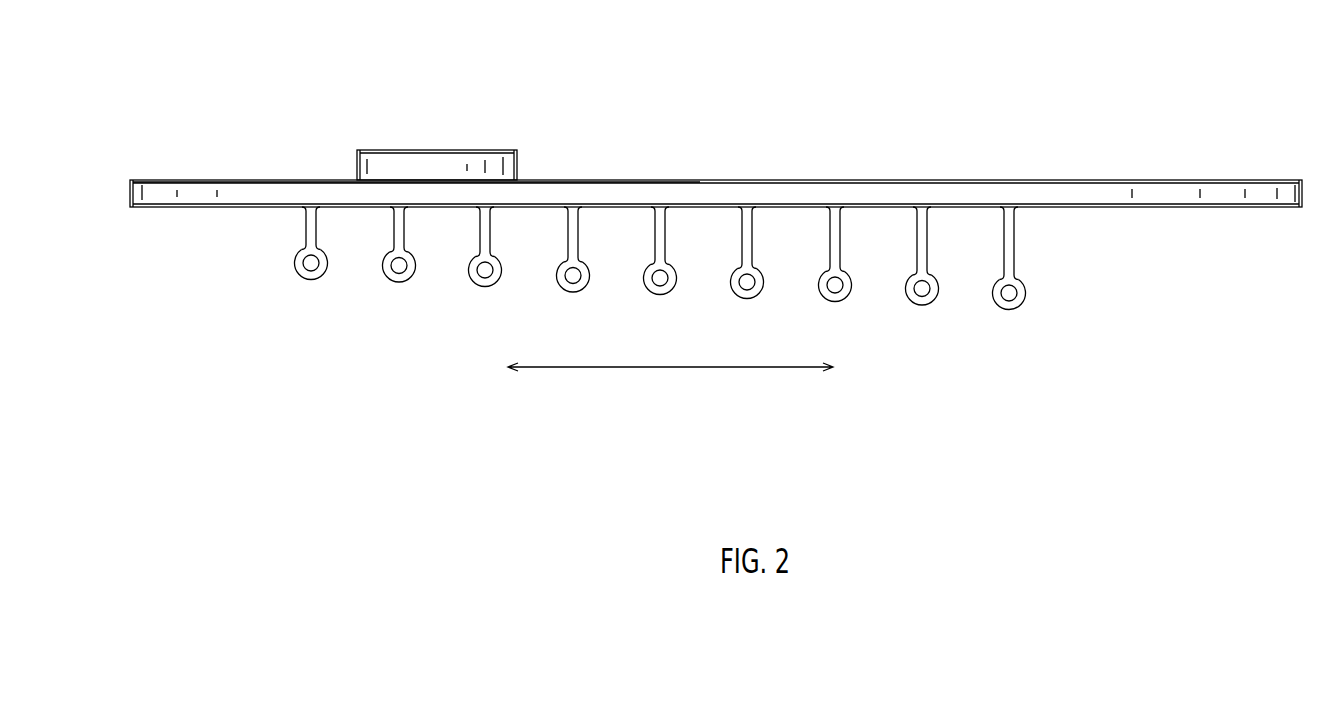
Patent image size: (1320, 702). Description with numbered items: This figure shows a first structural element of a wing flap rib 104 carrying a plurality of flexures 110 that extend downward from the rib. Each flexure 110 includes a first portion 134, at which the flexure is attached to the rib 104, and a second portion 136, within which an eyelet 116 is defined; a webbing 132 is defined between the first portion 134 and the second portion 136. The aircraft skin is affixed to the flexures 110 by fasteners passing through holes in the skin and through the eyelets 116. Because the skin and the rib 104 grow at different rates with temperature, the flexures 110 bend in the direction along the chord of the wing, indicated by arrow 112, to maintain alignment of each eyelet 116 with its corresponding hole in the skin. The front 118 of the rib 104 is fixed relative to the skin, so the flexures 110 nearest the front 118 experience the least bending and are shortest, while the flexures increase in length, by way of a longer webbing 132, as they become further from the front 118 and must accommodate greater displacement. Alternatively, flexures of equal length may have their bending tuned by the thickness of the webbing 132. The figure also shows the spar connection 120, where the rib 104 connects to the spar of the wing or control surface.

The rib 104 is at (273, 188).
The front of the rib 118 is at (150, 186).
The spar connection 120 is at (428, 156).
The flexures 110 is at (693, 291).
The arrow 112 is at (616, 368).
The eyelets 116 is at (302, 262).
The webbing 132 is at (302, 231).
The first portion 134 is at (1022, 208).
The second portion 136 is at (1025, 293).